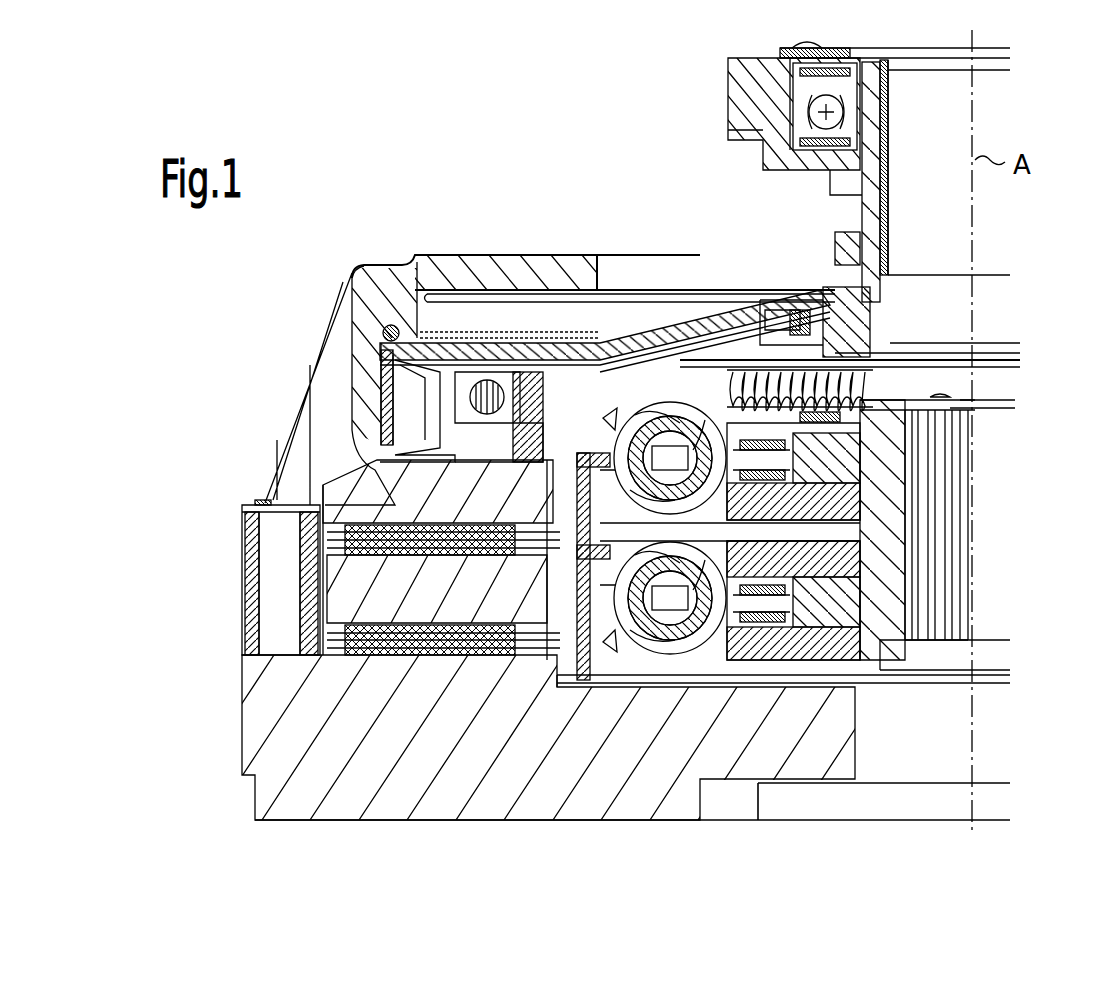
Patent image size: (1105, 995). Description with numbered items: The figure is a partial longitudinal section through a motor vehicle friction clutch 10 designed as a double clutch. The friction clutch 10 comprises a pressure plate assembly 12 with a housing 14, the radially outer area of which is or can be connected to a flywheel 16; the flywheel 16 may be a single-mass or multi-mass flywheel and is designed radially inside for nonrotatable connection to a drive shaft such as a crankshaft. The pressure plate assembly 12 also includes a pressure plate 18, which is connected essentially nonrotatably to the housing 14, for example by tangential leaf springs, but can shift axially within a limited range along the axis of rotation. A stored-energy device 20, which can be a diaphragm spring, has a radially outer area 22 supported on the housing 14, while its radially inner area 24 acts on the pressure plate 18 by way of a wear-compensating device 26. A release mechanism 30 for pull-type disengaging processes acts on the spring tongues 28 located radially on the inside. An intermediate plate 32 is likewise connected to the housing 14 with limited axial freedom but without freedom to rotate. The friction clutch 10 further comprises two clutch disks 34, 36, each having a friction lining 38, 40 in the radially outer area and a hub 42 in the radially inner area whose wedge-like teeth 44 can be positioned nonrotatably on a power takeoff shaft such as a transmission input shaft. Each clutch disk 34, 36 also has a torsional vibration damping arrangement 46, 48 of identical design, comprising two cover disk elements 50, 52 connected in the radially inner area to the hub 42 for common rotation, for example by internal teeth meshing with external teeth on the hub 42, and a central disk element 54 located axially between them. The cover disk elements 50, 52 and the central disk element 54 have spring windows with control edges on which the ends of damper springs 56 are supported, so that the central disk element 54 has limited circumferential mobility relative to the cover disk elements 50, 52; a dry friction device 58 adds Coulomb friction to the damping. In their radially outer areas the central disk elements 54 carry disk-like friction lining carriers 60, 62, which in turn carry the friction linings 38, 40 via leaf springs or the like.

The friction clutch 10 is at (388, 218).
The pressure plate assembly 12 is at (308, 333).
The housing 14 is at (362, 268).
The flywheel 16 is at (242, 740).
The pressure plate 18 is at (345, 487).
The stored-energy device 20 is at (522, 340).
The radially outer area 22 is at (400, 345).
The radially inner area 24 is at (470, 340).
The wear-compensating device 26 is at (430, 383).
The spring tongues 28 is at (692, 337).
The release mechanism 30 is at (706, 113).
The intermediate plate 32 is at (345, 588).
The clutch disk 34 is at (600, 525).
The clutch disk 36 is at (640, 672).
The friction lining 38 is at (345, 522).
The friction lining 40 is at (317, 657).
The hub 42 is at (998, 388).
The wedge-like teeth 44 is at (955, 545).
The torsional vibration damping arrangement 46 is at (776, 392).
The torsional vibration damping arrangement 48 is at (778, 660).
The cover disk element 50 is at (776, 430).
The cover disk element 52 is at (860, 522).
The central disk element 54 is at (673, 658).
The damper spring 56 is at (885, 290).
The dry friction device 58 is at (870, 350).
The friction lining carrier 60 is at (330, 545).
The friction lining carrier 62 is at (330, 645).